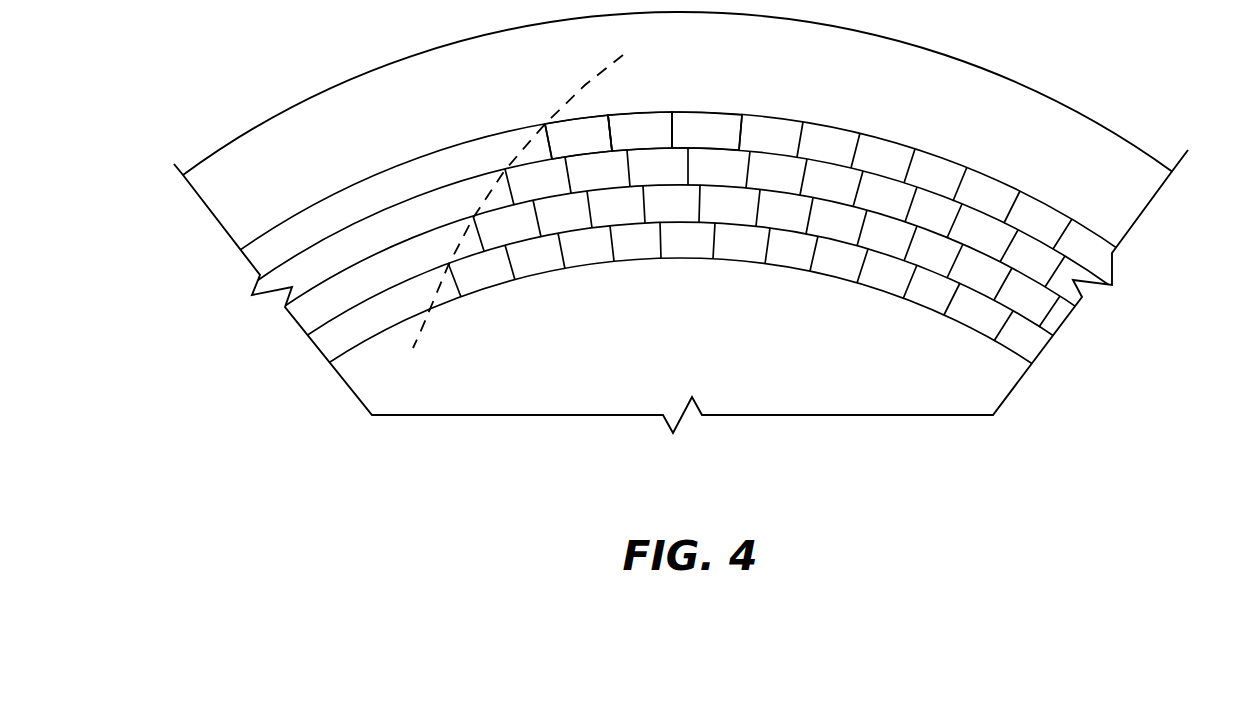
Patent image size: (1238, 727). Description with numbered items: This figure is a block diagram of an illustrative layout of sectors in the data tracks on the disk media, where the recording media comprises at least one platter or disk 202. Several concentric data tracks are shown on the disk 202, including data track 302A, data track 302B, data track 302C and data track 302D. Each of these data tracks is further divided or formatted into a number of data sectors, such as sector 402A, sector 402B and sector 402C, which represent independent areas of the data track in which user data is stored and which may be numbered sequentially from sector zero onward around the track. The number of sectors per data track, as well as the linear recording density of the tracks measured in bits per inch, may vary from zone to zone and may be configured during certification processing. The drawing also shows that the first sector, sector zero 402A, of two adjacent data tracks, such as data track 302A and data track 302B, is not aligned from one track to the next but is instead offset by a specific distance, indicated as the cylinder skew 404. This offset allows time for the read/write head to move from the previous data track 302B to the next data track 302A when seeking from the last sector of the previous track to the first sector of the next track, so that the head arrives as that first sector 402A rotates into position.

The disk / storage medium 202 is at (690, 62).
The first track 302A is at (1120, 272).
The second track 302B is at (1096, 300).
The third track 302C is at (1073, 331).
The fourth track 302D is at (1054, 365).
The first sector 402A is at (600, 113).
The second sector 402B is at (659, 113).
The third sector 402C is at (727, 113).
The skew line 404 is at (571, 91).